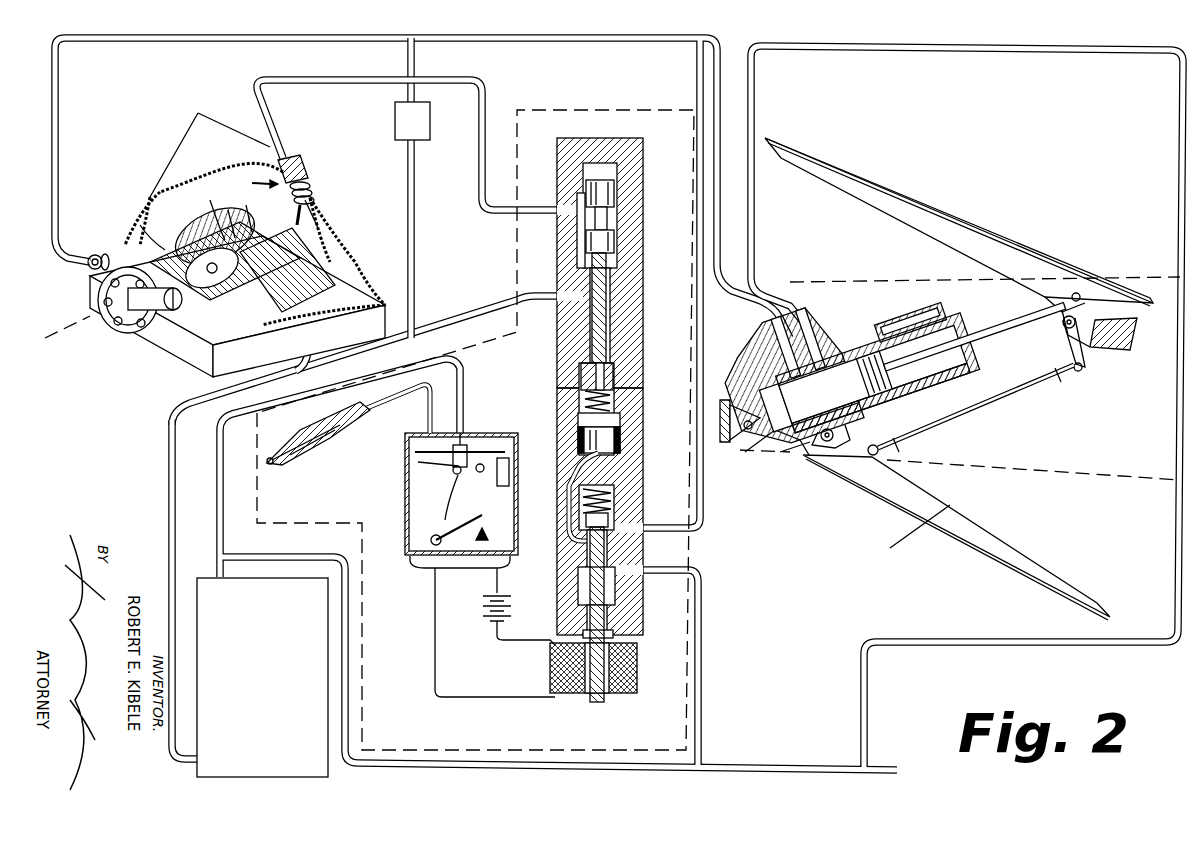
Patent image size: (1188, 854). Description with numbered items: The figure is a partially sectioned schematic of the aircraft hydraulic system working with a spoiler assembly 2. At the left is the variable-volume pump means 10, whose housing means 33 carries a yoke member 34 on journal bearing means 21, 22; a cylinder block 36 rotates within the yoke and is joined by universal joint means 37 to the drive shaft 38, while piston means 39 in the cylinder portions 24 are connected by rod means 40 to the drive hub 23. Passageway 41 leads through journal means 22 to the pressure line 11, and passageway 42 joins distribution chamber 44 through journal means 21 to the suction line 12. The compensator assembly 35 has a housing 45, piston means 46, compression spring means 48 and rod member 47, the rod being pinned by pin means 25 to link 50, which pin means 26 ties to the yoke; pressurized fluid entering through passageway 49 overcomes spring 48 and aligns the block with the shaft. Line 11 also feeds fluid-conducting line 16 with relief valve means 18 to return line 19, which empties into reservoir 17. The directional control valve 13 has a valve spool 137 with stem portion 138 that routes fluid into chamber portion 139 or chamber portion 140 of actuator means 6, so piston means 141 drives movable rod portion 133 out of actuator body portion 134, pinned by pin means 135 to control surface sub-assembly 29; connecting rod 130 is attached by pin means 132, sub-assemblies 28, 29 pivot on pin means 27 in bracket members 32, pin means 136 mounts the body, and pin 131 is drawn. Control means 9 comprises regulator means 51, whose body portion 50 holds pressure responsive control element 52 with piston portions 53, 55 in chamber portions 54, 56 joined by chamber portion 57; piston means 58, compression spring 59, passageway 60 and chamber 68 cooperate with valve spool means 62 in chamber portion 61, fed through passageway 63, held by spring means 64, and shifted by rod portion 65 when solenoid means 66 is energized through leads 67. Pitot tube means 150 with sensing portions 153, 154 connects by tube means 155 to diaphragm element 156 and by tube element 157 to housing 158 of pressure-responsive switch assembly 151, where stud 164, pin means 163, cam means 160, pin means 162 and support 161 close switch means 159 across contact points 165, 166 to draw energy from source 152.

The spoiler assembly 2 is at (940, 530).
The actuator means 6 is at (780, 462).
The control means 9 is at (296, 522).
The pump means 10 is at (217, 225).
The pressure line 11 is at (75, 16).
The suction line 12 is at (168, 520).
The directional control valve 13 is at (894, 343).
The fluid-conducting line 16 is at (415, 197).
The fluid reservoir 17 is at (265, 684).
The relief valve means 18 is at (431, 122).
The return line 19 is at (515, 302).
The journal bearing means 21 is at (200, 350).
The journal bearing means 22 is at (86, 266).
The drive hub 23 is at (185, 320).
The cylinder portions 24 is at (195, 225).
The pin means 25 is at (335, 245).
The pin means 26 is at (315, 282).
The pin means 27 is at (1062, 326).
The control surface sub-assembly 28 is at (990, 565).
The control surface sub-assembly 29 is at (958, 215).
The bracket members 32 is at (1130, 338).
The housing means 33 is at (192, 135).
The yoke member 34 is at (330, 310).
The compensator assembly 35 is at (246, 200).
The cylinder block 36 is at (228, 205).
The universal joint means 37 is at (230, 200).
The drive shaft 38 is at (118, 328).
The piston means 39 is at (212, 190).
The rod means 40 is at (140, 225).
The passageway 41 is at (160, 240).
The passageway 42 is at (295, 328).
The distribution chamber 44 is at (286, 178).
The housing 45 is at (320, 205).
The piston means 46 is at (305, 160).
The rod member 47 is at (325, 222).
The compression spring means 48 is at (312, 190).
The passageway 49 is at (362, 78).
The link 50 is at (352, 264).
The regulator means 51 is at (562, 409).
The pressure responsive control element 52 is at (608, 262).
The piston portion 53 is at (616, 190).
The chamber portion 54 is at (600, 160).
The piston portion 55 is at (612, 240).
The chamber 56 is at (612, 300).
The chamber portion 57 is at (560, 252).
The piston means 58 is at (622, 443).
The compression spring 59 is at (612, 398).
The passageway 60 is at (616, 370).
The chamber portion 61 is at (556, 560).
The valve spool means 62 is at (640, 538).
The passageway 63 is at (566, 468).
The spring means 64 is at (616, 493).
The rod portion 65 is at (615, 636).
The solenoid means 66 is at (638, 674).
The leads 67 is at (530, 645).
The chamber 68 is at (622, 420).
The connecting rod 130 is at (995, 405).
The pin 131 is at (880, 452).
The pin means 132 is at (1083, 370).
The movable rod portion 133 is at (975, 320).
The actuator body portion 134 is at (922, 385).
The pin means 135 is at (1078, 292).
The pin means 136 is at (748, 448).
The valve spool 137 is at (850, 340).
The stem portion 138 is at (752, 350).
The chamber portion 139 is at (832, 402).
The chamber portion 140 is at (960, 357).
The piston means 141 is at (900, 330).
The Pitot tube means 150 is at (312, 428).
The pressure-responsive switch assembly 151 is at (398, 510).
The source of electrical energy 152 is at (485, 624).
The sensing portion 153 is at (270, 468).
The sensing portion 154 is at (305, 462).
The tube means 155 is at (465, 398).
The diaphragm element 156 is at (475, 440).
The tube element 157 is at (426, 420).
The housing 158 is at (408, 446).
The switch means 159 is at (470, 520).
The cam means 160 is at (462, 490).
The support 161 is at (487, 470).
The pin means 162 is at (505, 458).
The pin means 163 is at (450, 472).
The stud 164 is at (412, 462).
The contact point 165 is at (437, 545).
The contact point 166 is at (490, 536).